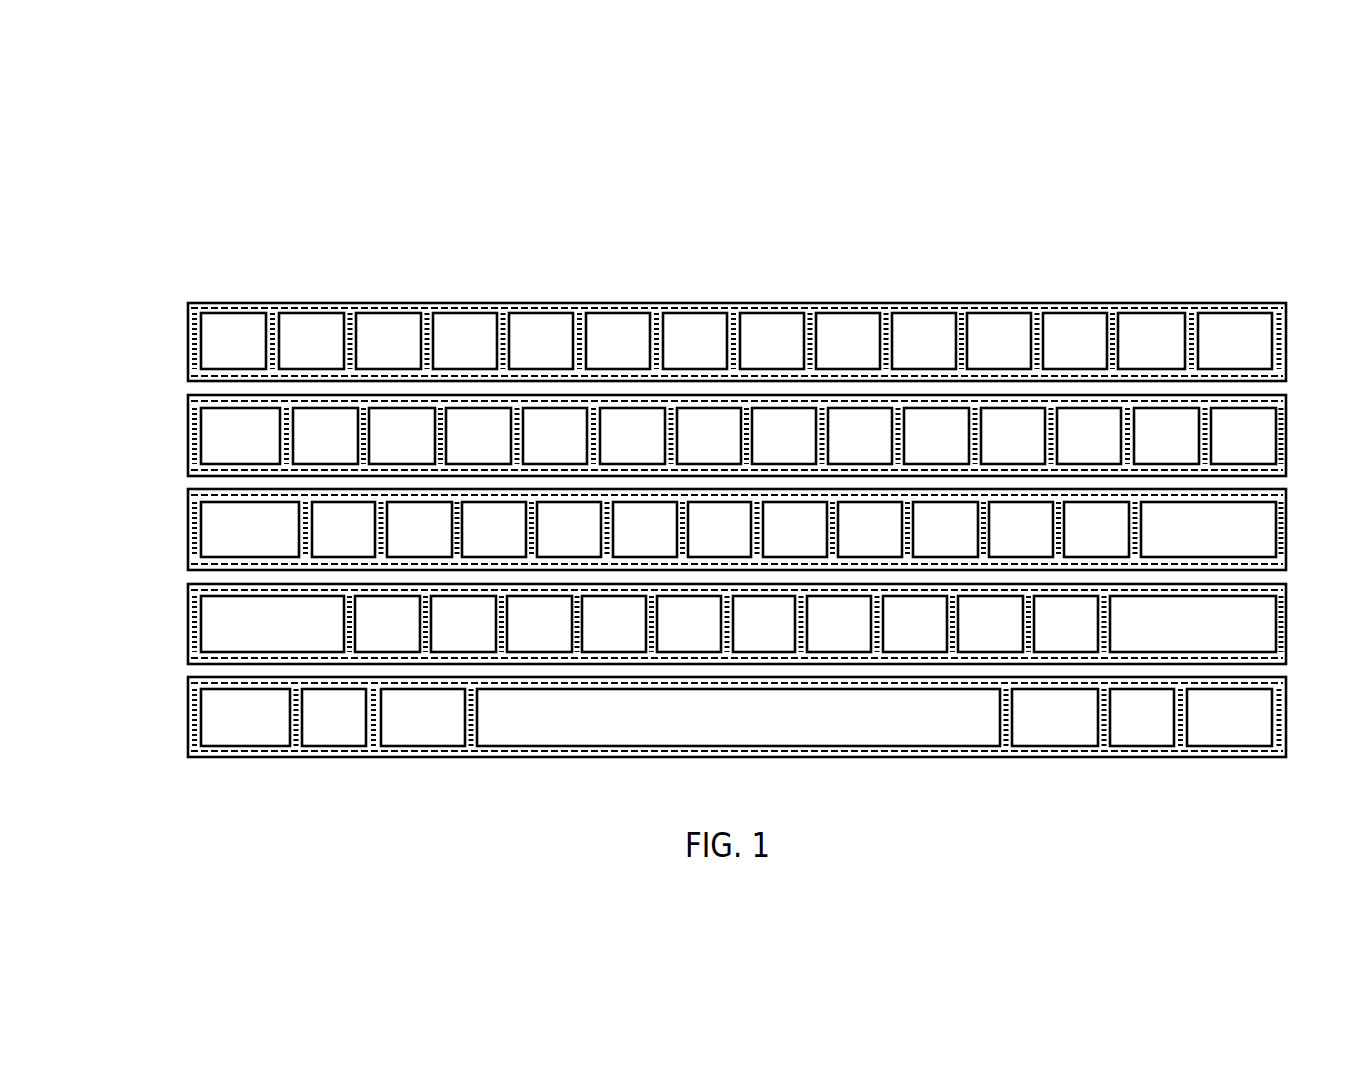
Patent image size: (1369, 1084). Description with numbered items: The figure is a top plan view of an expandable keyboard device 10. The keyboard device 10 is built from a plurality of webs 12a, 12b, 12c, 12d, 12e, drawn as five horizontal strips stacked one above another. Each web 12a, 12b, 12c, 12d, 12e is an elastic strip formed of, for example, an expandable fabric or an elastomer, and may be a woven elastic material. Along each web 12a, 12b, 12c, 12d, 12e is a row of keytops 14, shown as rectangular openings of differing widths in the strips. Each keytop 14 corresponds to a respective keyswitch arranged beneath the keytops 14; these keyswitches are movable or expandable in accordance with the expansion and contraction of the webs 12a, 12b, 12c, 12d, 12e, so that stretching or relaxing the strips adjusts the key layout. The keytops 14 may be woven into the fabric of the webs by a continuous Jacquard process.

The expandable keyboard device 10 is at (1021, 216).
The web 12a is at (189, 357).
The web 12b is at (189, 444).
The web 12c is at (189, 535).
The web 12d is at (189, 625).
The web 12e is at (190, 725).
The keytop 14 is at (230, 322).